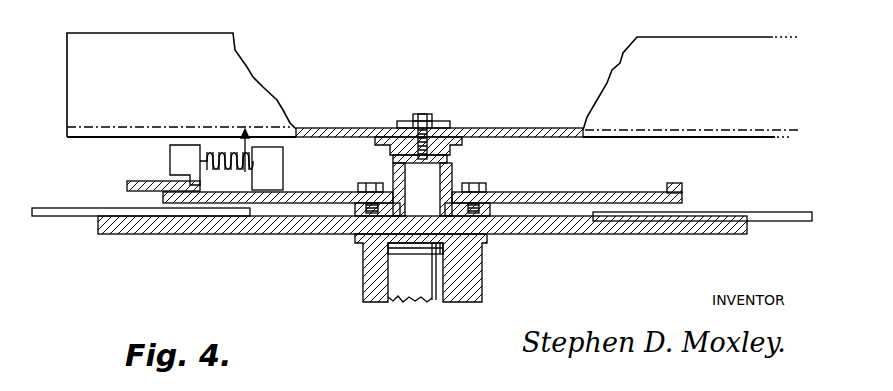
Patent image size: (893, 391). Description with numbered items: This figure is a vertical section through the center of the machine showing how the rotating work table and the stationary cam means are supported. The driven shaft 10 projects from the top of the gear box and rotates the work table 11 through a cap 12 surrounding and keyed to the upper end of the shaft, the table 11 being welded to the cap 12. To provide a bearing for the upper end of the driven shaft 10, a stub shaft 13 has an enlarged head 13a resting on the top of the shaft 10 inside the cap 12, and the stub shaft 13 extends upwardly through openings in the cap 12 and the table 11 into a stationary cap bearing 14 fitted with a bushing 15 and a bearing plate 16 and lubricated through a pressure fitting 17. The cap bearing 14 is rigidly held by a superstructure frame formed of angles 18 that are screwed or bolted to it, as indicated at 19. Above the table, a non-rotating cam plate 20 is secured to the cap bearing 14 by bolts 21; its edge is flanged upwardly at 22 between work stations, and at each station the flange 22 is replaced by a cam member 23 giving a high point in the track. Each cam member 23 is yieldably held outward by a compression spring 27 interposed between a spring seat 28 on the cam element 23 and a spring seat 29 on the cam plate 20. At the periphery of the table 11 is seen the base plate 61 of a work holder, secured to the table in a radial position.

The driven shaft 10 is at (400, 285).
The work table 11 is at (294, 224).
The cap 12 is at (366, 279).
The stub shaft 13 is at (449, 168).
The enlarged head 13a is at (540, 277).
The cap bearing 14 is at (393, 176).
The bushing 15 is at (396, 163).
The bearing plate 16 is at (388, 150).
The pressure fitting 17 is at (425, 116).
The angles 18 is at (466, 136).
The screws or bolts 19 is at (441, 123).
The cam plate 20 is at (502, 198).
The bolts 21 is at (484, 183).
The flange 22 is at (683, 186).
The cam member 23 is at (130, 182).
The compression spring 27 is at (205, 152).
The spring seat 28 is at (170, 165).
The spring seat 29 is at (264, 181).
The base plate 61 is at (180, 210).